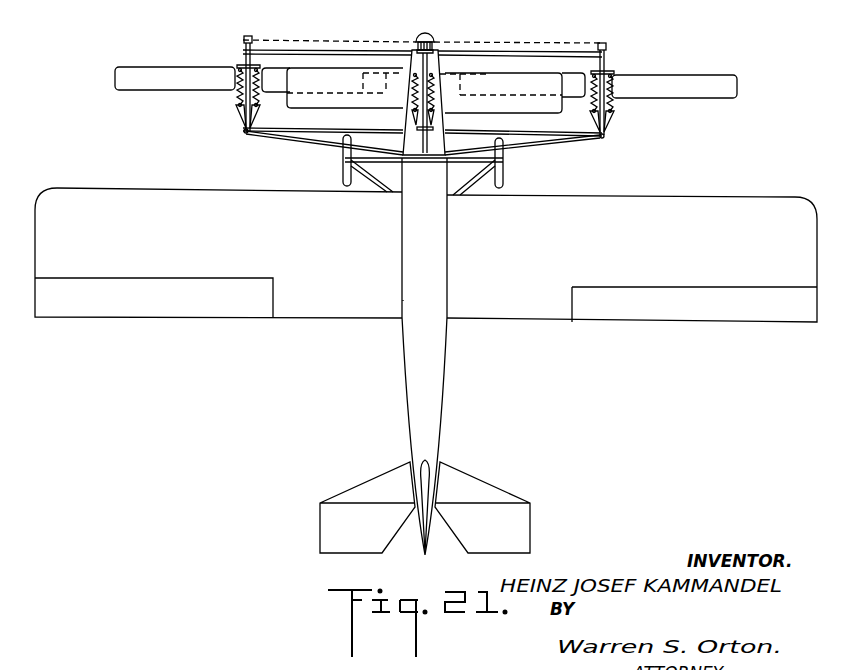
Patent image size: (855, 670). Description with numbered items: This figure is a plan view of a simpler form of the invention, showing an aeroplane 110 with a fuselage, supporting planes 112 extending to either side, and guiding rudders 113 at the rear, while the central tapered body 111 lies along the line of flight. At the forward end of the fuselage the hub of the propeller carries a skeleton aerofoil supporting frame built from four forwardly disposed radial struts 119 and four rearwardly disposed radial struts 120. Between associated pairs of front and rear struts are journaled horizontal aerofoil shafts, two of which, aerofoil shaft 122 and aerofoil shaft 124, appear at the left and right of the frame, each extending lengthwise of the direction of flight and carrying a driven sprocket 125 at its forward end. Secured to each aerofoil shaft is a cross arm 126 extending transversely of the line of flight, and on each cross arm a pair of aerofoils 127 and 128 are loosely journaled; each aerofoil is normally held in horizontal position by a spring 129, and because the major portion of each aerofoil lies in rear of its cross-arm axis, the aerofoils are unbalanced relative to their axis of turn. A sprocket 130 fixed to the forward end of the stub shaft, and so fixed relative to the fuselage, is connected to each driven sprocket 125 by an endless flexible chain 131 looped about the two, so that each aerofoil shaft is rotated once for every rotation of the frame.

The aeroplane 110 is at (476, 354).
The tail boom 111 is at (432, 415).
The supporting planes 112 is at (317, 260).
The guiding rudders 113 is at (452, 483).
The forwardly disposed radial struts 119 is at (340, 51).
The rearwardly disposed radial struts 120 is at (308, 142).
The aerofoil shaft 122 is at (243, 58).
The aerofoil shaft 124 is at (610, 60).
The driven sprocket 125 is at (250, 36).
The cross arm 126 is at (398, 73).
The aerofoil 127 is at (273, 85).
The aerofoil 128 is at (152, 58).
The spring 129 is at (237, 93).
The sprocket 130 is at (430, 48).
The endless flexible chain 131 is at (297, 40).